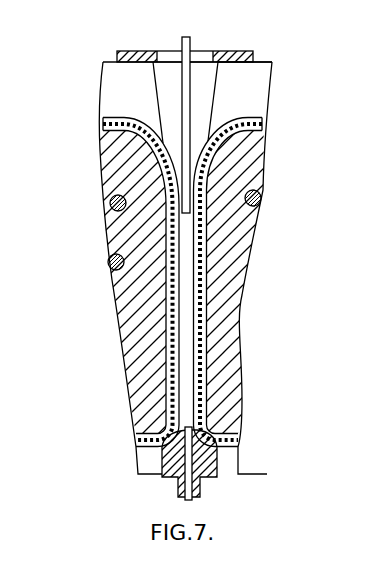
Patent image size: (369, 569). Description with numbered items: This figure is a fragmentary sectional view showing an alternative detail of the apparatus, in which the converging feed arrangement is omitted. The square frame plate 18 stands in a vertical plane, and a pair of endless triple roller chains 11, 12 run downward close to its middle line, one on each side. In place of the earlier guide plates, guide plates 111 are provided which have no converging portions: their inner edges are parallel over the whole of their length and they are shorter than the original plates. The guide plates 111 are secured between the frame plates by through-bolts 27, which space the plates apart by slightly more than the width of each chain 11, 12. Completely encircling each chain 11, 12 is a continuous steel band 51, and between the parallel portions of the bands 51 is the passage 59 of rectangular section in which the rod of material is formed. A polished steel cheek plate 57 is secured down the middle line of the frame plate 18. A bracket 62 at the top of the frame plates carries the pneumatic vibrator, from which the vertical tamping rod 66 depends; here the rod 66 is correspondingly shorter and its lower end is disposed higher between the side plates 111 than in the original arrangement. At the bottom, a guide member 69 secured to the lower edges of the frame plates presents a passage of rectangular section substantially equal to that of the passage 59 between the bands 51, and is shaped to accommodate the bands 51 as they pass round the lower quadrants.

The vertical rod 66 is at (190, 45).
The bracket 62 is at (251, 55).
The frame plate 18 is at (267, 73).
The cheek plate 57 is at (207, 100).
The continuous steel band 51 is at (102, 116).
The through-bolts 27 is at (109, 259).
The endless triple roller chain 12 is at (210, 232).
The endless triple roller chain 11 is at (167, 288).
The guide plates 111 is at (140, 315).
The passage 59 is at (197, 363).
The guide member 69 is at (165, 477).